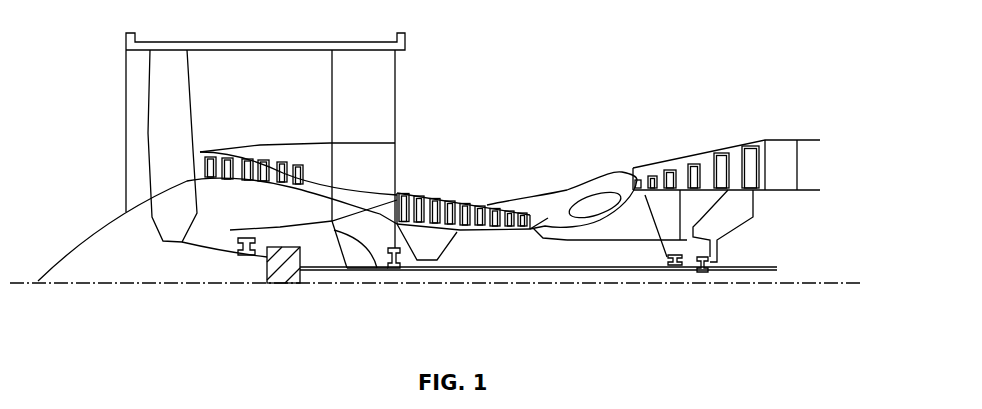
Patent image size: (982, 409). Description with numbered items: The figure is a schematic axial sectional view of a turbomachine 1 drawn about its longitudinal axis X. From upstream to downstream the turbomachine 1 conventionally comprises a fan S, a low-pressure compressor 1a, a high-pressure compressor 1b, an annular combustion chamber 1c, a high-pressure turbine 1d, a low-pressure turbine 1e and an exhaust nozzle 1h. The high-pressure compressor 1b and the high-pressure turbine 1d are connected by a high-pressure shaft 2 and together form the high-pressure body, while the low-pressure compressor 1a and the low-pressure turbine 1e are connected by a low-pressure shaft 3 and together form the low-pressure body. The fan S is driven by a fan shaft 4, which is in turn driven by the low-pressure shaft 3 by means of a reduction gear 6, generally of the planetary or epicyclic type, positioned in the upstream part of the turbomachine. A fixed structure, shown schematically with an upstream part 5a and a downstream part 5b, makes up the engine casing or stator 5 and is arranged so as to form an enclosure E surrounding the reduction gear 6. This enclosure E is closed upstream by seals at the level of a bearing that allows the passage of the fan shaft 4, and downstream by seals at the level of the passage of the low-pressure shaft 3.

The turbomachine 1 is at (510, 76).
The low-pressure compressor 1a is at (218, 153).
The high-pressure compressor 1b is at (423, 202).
The annular combustion chamber 1c is at (597, 197).
The high-pressure turbine 1d is at (635, 180).
The low-pressure turbine 1e is at (753, 147).
The exhaust nozzle 1h is at (807, 167).
The high-pressure shaft 2 is at (567, 241).
The low-pressure shaft 3 is at (490, 272).
The fan shaft 4 is at (232, 260).
The engine casing or stator 5 is at (313, 206).
The upstream part 5a is at (230, 257).
The downstream part 5b is at (374, 247).
The reduction gear 6 is at (285, 270).
The enclosure E is at (311, 246).
The fan S is at (160, 108).
The engine axis X is at (17, 283).